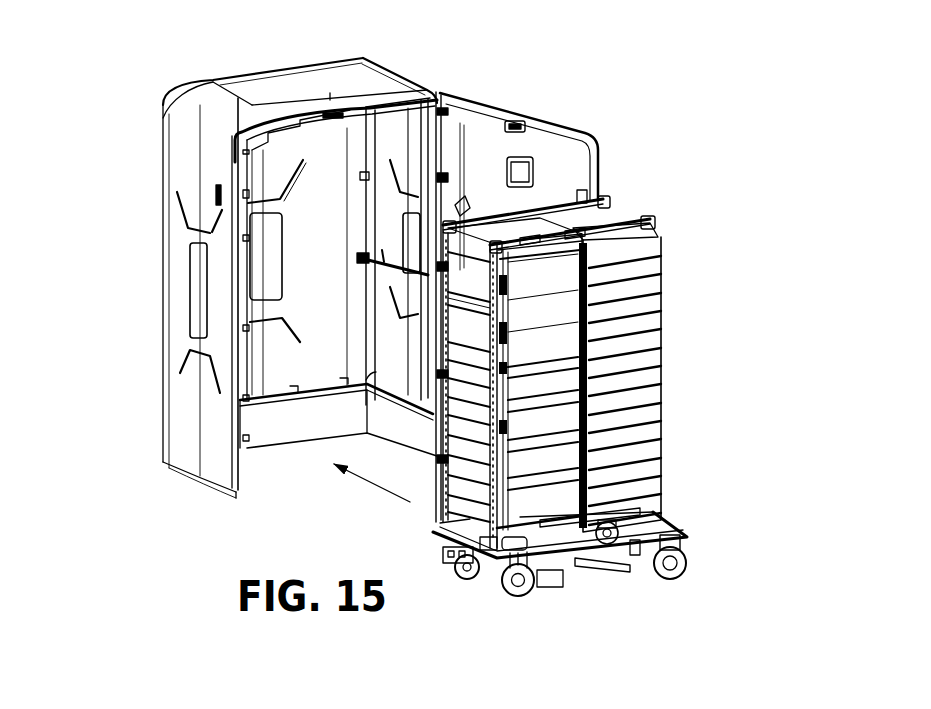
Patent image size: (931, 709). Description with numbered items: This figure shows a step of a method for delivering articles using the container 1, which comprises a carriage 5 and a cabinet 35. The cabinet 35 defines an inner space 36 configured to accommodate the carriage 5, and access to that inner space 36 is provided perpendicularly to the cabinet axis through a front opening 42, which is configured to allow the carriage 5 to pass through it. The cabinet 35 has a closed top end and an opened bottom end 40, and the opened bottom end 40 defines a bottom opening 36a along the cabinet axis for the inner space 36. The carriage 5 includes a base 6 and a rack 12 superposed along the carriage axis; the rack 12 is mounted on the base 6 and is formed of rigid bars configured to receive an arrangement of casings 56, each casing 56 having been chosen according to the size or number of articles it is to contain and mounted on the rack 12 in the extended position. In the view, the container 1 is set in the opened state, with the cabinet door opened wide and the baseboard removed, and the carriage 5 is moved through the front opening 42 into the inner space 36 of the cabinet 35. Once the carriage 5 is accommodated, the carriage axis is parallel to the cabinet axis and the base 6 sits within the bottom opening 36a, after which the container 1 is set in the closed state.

The container 1 is at (437, 300).
The carriage 5 is at (610, 362).
The base 6 is at (699, 553).
The rack 12 is at (610, 370).
The cabinet 35 is at (462, 73).
The inner space 36 is at (297, 365).
The bottom opening 36a is at (292, 460).
The opened bottom end 40 is at (222, 497).
The front opening 42 is at (236, 263).
The casings 56 is at (630, 396).